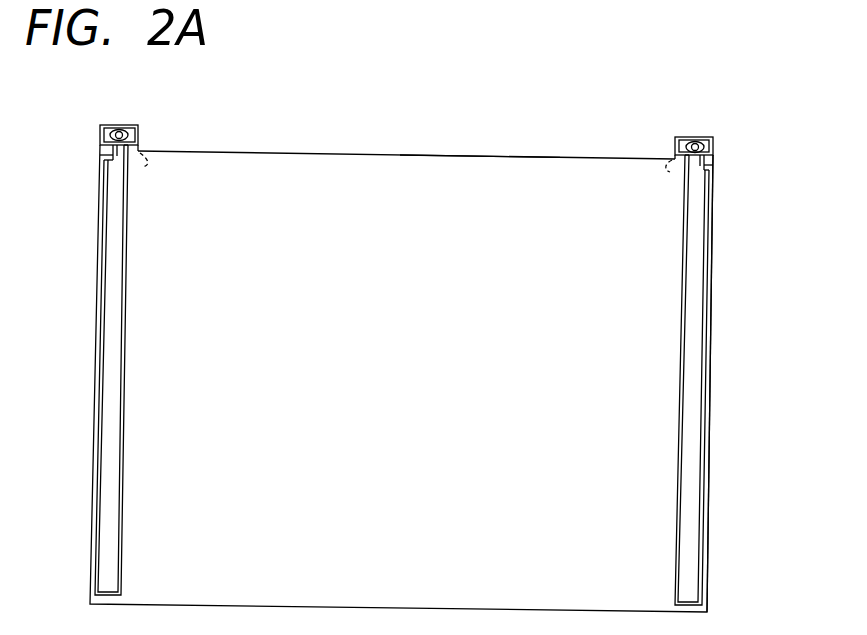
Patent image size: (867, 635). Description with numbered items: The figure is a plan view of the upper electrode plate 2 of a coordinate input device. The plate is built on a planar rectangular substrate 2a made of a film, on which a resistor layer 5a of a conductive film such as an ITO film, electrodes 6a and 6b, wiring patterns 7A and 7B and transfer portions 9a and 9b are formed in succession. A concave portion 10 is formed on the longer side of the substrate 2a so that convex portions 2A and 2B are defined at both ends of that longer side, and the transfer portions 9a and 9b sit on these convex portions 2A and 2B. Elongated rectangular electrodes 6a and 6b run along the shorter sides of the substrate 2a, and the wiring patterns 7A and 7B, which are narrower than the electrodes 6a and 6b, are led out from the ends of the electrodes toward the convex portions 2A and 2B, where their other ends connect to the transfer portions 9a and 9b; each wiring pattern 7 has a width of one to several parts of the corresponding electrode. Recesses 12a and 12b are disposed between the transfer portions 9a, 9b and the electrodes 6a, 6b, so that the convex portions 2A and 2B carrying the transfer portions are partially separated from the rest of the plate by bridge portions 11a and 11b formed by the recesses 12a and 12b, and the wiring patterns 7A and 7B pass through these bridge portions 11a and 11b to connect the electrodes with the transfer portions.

The upper electrode plate 2 is at (413, 122).
The substrate 2a is at (710, 398).
The convex portion 2A is at (101, 126).
The convex portion 2B is at (714, 142).
The resistor layer 5a is at (530, 172).
The electrode 6a is at (110, 353).
The electrode 6b is at (693, 308).
The wiring pattern 7 is at (406, 123).
The wiring pattern 7A is at (141, 150).
The wiring pattern 7B is at (687, 182).
The transfer portion 9a is at (112, 124).
The transfer portion 9b is at (697, 136).
The concave portion 10 is at (438, 151).
The bridge portion 11a is at (118, 168).
The bridge portion 11b is at (672, 158).
The recess 12a is at (100, 155).
The recess 12b is at (714, 168).